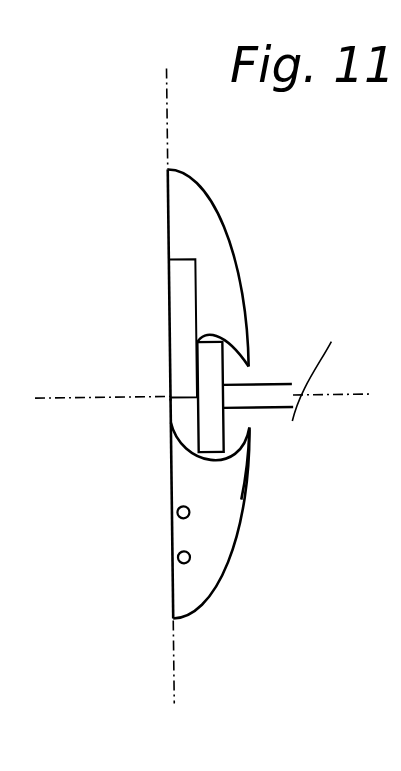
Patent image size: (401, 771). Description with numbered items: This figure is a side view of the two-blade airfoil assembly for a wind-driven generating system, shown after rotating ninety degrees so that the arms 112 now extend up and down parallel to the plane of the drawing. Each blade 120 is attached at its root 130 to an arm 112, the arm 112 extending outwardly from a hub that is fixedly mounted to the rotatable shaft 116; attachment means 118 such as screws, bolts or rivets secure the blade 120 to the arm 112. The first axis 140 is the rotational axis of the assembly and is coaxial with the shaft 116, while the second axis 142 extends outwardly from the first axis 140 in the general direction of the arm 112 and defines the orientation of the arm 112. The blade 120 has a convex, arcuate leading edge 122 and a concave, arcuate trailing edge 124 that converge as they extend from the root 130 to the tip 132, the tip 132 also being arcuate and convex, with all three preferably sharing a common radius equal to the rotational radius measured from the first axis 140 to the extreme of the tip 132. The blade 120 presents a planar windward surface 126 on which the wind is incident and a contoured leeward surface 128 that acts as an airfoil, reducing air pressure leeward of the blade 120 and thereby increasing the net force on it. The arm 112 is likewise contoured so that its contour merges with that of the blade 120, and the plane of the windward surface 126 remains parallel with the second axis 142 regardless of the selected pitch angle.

The arm 112 is at (185, 405).
The rotatable shaft 116 is at (263, 393).
The attachment means 118 is at (173, 565).
The blade 120 is at (213, 255).
The leading edge 122 is at (227, 550).
The trailing edge 124 is at (244, 470).
The windward surface 126 is at (187, 483).
The leeward surface 128 is at (185, 212).
The root 130 is at (172, 530).
The tip 132 is at (248, 440).
The first axis 140 is at (80, 395).
The second axis 142 is at (175, 673).